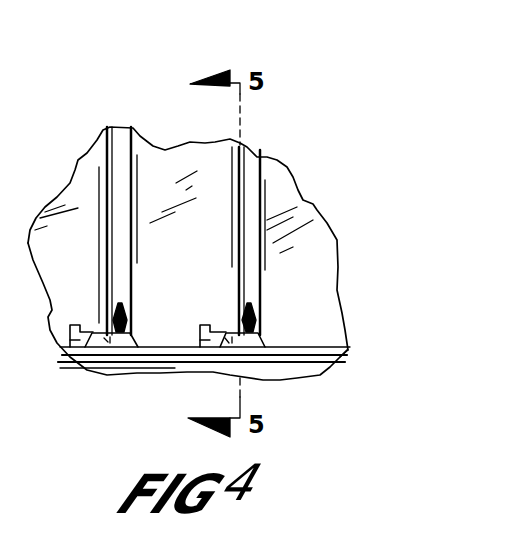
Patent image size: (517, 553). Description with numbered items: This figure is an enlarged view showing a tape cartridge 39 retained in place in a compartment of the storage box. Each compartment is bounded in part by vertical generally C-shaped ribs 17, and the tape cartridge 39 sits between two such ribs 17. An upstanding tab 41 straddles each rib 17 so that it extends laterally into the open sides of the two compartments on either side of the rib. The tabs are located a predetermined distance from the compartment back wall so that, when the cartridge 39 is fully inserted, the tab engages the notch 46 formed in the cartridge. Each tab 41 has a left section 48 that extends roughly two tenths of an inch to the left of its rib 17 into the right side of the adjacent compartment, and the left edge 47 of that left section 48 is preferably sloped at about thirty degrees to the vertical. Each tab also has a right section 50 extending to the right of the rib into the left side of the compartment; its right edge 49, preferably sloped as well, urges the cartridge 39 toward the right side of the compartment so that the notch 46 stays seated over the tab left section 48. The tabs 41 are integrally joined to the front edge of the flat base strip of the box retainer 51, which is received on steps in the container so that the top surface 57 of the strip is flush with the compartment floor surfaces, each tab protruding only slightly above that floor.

The rib 17 is at (103, 157).
The tape cartridge 39 is at (150, 160).
The upstanding tab 41 is at (115, 306).
The notch 46 is at (78, 338).
The left edge of tab left section 47 is at (88, 331).
The tab left section 48 is at (90, 348).
The right edge of tab right section 49 is at (135, 340).
The tab right section 50 is at (120, 350).
The box retainer 51 is at (358, 358).
The top surface of retainer strip 57 is at (154, 350).